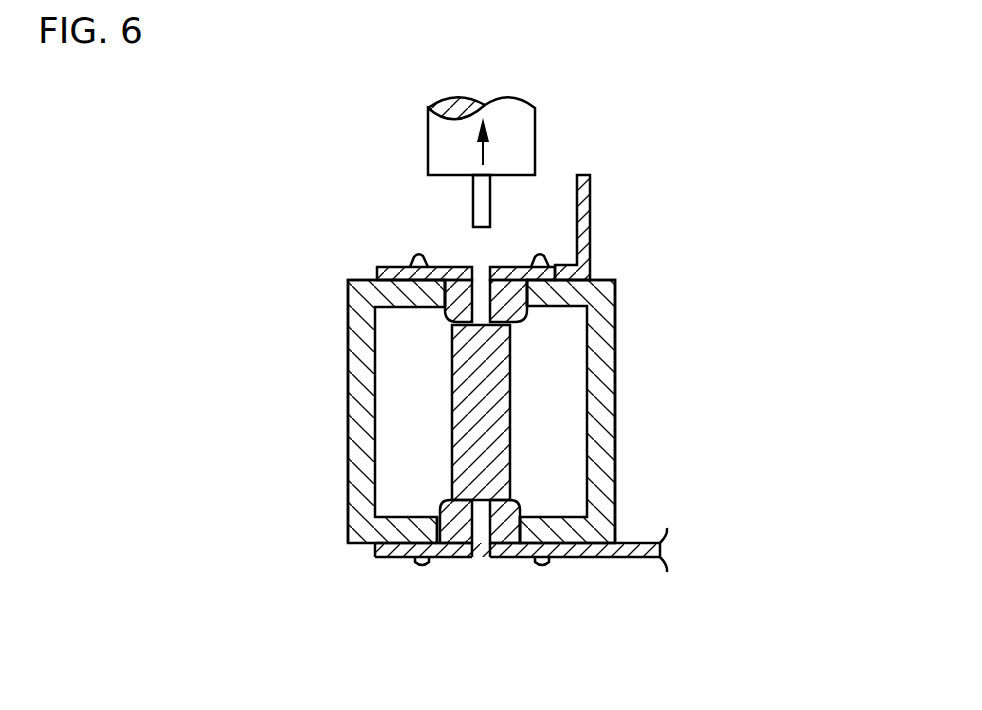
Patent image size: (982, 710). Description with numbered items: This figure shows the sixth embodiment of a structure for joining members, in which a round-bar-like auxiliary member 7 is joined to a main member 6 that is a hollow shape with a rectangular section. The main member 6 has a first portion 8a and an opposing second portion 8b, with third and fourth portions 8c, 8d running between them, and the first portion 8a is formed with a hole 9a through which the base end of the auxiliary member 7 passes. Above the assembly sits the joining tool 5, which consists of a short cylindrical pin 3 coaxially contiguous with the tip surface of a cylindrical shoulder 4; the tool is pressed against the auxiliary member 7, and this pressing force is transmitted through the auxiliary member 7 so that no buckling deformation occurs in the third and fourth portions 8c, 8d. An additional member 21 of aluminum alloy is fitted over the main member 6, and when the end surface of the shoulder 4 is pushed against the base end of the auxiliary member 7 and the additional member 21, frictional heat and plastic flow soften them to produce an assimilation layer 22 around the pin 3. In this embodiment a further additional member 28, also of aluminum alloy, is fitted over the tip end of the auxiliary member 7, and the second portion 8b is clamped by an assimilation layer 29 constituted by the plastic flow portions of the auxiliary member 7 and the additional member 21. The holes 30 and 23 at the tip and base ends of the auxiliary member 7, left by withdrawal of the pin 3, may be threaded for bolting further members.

The pin 3 is at (480, 196).
The shoulder 4 is at (452, 130).
The joining tool 5 is at (550, 120).
The main member 6 is at (624, 297).
The auxiliary member 7 is at (478, 440).
The first portion 8a is at (553, 293).
The second portion 8b is at (577, 530).
The third portion 8c is at (362, 392).
The fourth portion 8d is at (600, 408).
The hole 9a is at (522, 317).
The additional member 21 is at (592, 186).
The assimilation layer 22 is at (445, 326).
The hole 23 is at (487, 270).
The additional member 28 is at (648, 555).
The assimilation layer 29 is at (458, 540).
The hole 30 is at (473, 548).